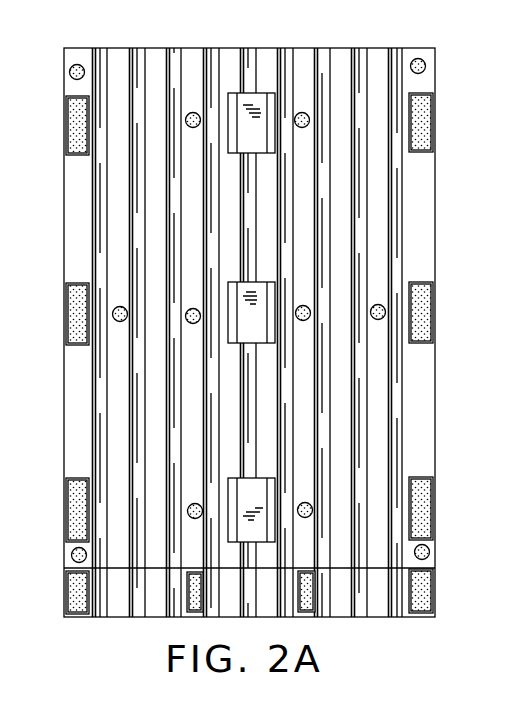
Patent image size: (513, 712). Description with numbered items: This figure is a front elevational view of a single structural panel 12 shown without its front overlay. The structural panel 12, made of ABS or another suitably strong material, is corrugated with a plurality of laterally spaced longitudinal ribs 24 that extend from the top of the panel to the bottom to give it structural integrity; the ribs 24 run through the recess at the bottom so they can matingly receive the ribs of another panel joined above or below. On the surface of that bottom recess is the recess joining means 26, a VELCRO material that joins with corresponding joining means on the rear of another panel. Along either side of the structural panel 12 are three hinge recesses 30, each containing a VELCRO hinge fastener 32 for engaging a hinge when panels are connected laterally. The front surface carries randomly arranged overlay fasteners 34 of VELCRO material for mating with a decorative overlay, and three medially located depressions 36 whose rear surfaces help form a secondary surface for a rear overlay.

The structural panel 12 is at (185, 43).
The longitudinal ribs 24 is at (396, 56).
The recess joining means 26 is at (423, 594).
The hinge recesses 30 is at (446, 108).
The hinge fastener 32 is at (426, 123).
The overlay fasteners 34 is at (424, 60).
The depressions 36 is at (258, 103).